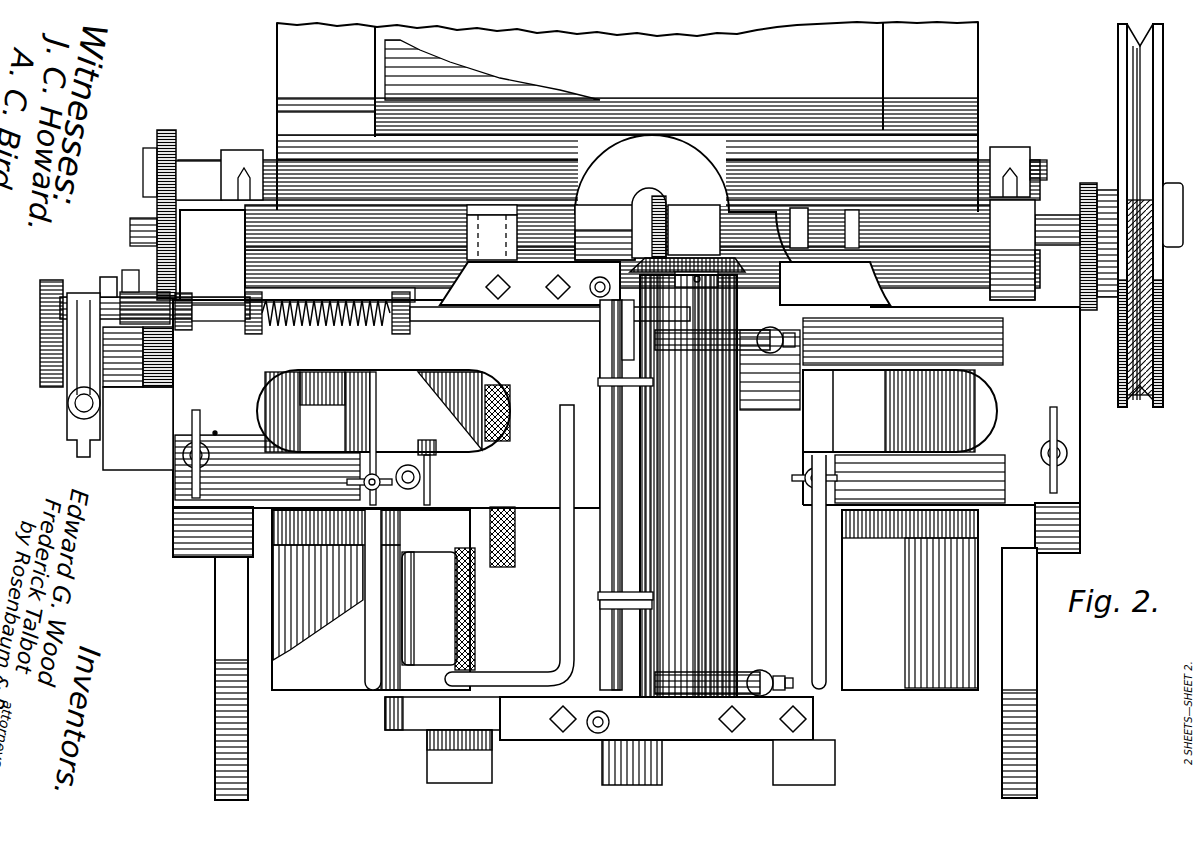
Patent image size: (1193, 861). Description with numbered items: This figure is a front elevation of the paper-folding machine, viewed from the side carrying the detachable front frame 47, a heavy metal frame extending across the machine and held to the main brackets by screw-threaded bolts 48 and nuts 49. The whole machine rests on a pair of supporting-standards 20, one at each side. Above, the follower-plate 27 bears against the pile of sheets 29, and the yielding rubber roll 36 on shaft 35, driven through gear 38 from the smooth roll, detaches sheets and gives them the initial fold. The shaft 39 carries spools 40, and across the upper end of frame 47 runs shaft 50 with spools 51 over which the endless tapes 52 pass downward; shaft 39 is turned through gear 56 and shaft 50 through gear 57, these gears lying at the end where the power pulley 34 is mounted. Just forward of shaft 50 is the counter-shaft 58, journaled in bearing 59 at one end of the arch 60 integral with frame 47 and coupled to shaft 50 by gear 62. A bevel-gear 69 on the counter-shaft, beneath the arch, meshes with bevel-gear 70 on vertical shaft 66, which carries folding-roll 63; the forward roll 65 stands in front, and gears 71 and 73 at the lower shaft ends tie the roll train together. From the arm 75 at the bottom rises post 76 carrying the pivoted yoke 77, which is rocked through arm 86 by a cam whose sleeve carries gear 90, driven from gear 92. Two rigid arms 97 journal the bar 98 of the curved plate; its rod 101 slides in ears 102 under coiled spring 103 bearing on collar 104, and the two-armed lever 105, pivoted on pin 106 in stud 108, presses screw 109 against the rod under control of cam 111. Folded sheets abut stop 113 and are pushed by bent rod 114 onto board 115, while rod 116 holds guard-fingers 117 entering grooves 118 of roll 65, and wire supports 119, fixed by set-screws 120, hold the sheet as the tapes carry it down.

The supporting-standards 20 is at (215, 612).
The follower-plate 27 is at (962, 75).
The pile of sheets of paper 29 is at (862, 86).
The power wheel or pulley 34 is at (1156, 410).
The shaft 35 is at (1040, 168).
The roll 36 is at (960, 152).
The gear 38 is at (176, 142).
The shaft 39 is at (970, 272).
The spools 40 is at (452, 281).
The frame 47 is at (175, 535).
The screw-threaded bolts 48 is at (185, 462).
The nuts 49 is at (193, 492).
The shaft 50 is at (992, 230).
The spools 51 is at (472, 258).
The endless tapes 52 is at (502, 200).
The gear 56 is at (1092, 305).
The gear 57 is at (1086, 200).
The counter-shaft 58 is at (245, 232).
The bearing 59 is at (586, 218).
The arch 60 is at (655, 143).
The gear 62 is at (143, 225).
The folding-roll 63 is at (720, 452).
The folding-roll 65 is at (605, 505).
The vertical shaft 66 is at (718, 292).
The bevel-gear 69 is at (660, 210).
The bevel-gear 70 is at (712, 262).
The gear 71 is at (712, 740).
The gear 73 is at (588, 732).
The arm 75 is at (398, 712).
The post 76 is at (420, 616).
The yoke 77 is at (465, 577).
The arm 86 is at (108, 276).
The gear 90 is at (143, 376).
The gear 92 is at (175, 296).
The arms 97 is at (733, 338).
The bar 98 is at (660, 604).
The rod 101 is at (460, 322).
The ears 102 is at (188, 332).
The coiled spring 103 is at (330, 332).
The collar 104 is at (262, 332).
The two-armed lever or yoke 105 is at (67, 392).
The pin 106 is at (72, 414).
The stud 108 is at (145, 405).
The screw 109 is at (100, 282).
The cam 111 is at (40, 348).
The stop 113 is at (430, 480).
The bent rod 114 is at (560, 472).
The board 115 is at (498, 742).
The rod 116 is at (610, 447).
The guard-fingers 117 is at (598, 381).
The groove 118 is at (625, 412).
The supports 119 is at (820, 598).
The set-screws 120 is at (355, 480).